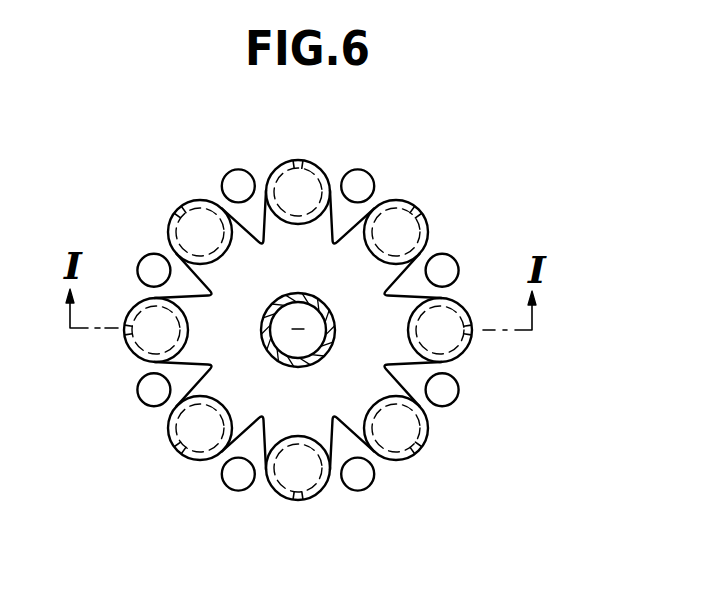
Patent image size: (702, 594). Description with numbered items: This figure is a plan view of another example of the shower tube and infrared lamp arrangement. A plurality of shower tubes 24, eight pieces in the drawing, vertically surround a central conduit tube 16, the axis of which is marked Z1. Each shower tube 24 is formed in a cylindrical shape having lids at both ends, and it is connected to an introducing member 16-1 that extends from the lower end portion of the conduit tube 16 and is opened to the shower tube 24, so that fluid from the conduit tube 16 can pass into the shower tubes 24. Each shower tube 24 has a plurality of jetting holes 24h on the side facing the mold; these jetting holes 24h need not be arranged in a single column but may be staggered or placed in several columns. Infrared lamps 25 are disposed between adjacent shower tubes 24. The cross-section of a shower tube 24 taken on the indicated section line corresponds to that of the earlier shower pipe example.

The conduit tube 16 is at (334, 318).
The introducing member 16-1 is at (358, 250).
The shower tube 24 is at (167, 427).
The jetting holes 24h is at (177, 455).
The infrared lamps 25 is at (226, 485).
The axis of rotation Z1 is at (298, 327).